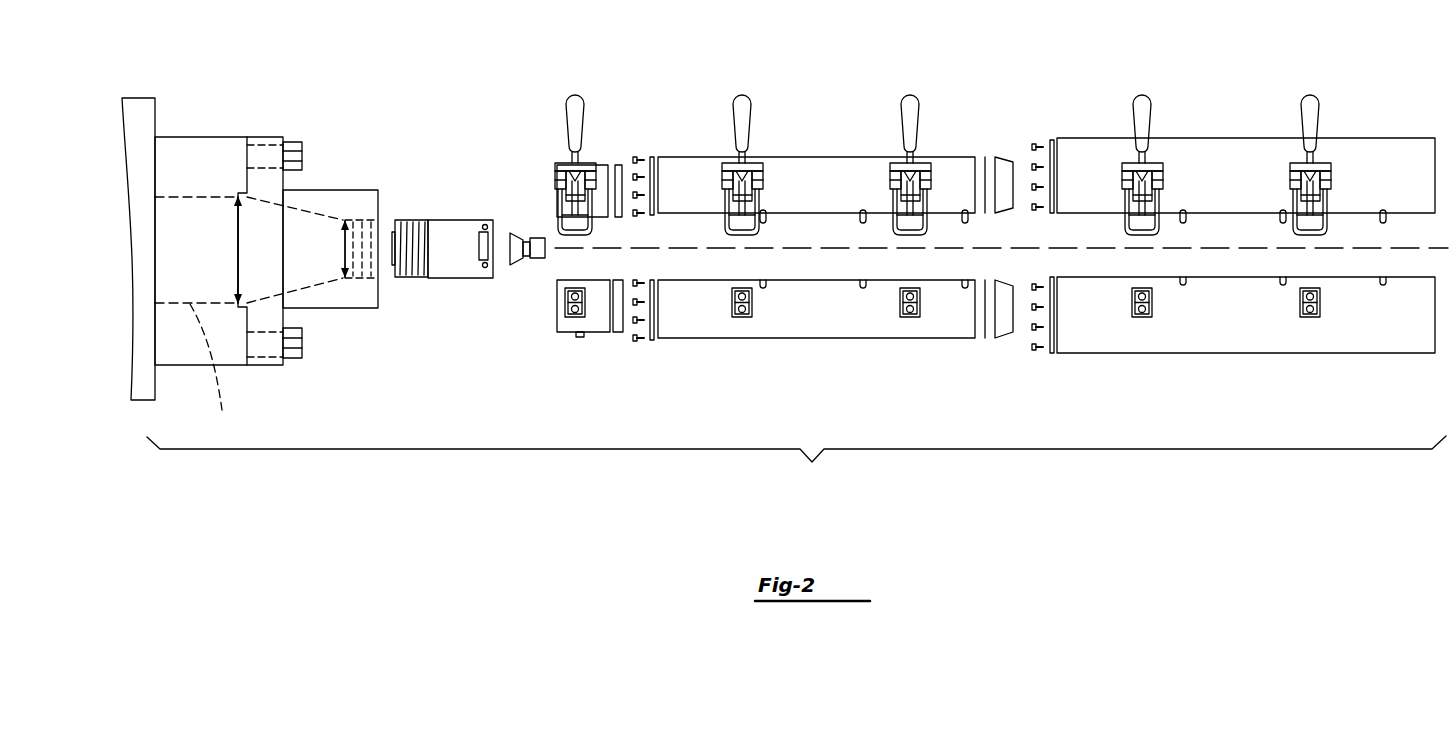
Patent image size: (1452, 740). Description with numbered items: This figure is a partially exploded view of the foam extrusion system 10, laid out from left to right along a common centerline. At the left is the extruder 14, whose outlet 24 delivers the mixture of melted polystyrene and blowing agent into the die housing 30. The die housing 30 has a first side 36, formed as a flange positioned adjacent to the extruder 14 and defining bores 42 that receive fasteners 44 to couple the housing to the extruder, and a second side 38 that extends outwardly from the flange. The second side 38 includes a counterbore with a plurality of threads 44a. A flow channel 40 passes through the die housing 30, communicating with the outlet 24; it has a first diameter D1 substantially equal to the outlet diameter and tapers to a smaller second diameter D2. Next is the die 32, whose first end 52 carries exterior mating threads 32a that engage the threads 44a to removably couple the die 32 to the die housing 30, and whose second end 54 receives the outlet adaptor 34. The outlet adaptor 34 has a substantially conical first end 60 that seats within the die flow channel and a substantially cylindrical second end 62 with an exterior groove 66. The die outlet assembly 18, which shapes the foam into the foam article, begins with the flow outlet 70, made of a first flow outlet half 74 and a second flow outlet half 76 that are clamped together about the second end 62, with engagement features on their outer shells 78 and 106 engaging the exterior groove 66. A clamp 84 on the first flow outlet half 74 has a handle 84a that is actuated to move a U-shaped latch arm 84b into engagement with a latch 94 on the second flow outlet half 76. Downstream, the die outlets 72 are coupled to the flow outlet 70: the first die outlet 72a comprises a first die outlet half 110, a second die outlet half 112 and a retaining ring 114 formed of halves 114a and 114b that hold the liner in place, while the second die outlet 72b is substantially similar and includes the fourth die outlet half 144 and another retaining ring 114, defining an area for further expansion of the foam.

The system 10 is at (785, 258).
The extruder 14 is at (148, 166).
The die outlet assembly 18 is at (975, 236).
The outlet 24 is at (210, 372).
The die housing 30 is at (331, 266).
The die 32 is at (449, 274).
The mating threads 32a is at (410, 280).
The outlet adaptor 34 is at (561, 271).
The first side 36 is at (243, 131).
The second side 38 is at (385, 202).
The flow channel 40 is at (298, 216).
The bore 42 is at (268, 143).
The fastener 44 is at (300, 140).
The threads 44a is at (362, 220).
The first end 52 is at (413, 212).
The second end 54 is at (492, 288).
The first end 60 is at (507, 222).
The second end 62 is at (548, 257).
The exterior groove 66 is at (532, 243).
The flow outlet 70 is at (975, 236).
The die outlet 72 is at (1046, 273).
The first die outlet 72a is at (835, 271).
The second die outlet 72b is at (1246, 288).
The first flow outlet half 74 is at (604, 163).
The second flow outlet half 76 is at (563, 360).
The outer shell 78 is at (619, 163).
The clamp 84 is at (956, 135).
The handle 84a is at (567, 107).
The U-shaped latch arm 84b is at (593, 229).
The latch 94 is at (586, 298).
The outer shell 106 is at (620, 342).
The first die outlet half 110 is at (820, 157).
The second die outlet half 112 is at (845, 349).
The retaining ring 114 is at (654, 277).
The first half of retaining ring 114a is at (652, 157).
The second half of retaining ring 114b is at (654, 344).
The fourth die outlet half 144 is at (1251, 368).
The first diameter D1 is at (240, 254).
The second diameter D2 is at (343, 250).